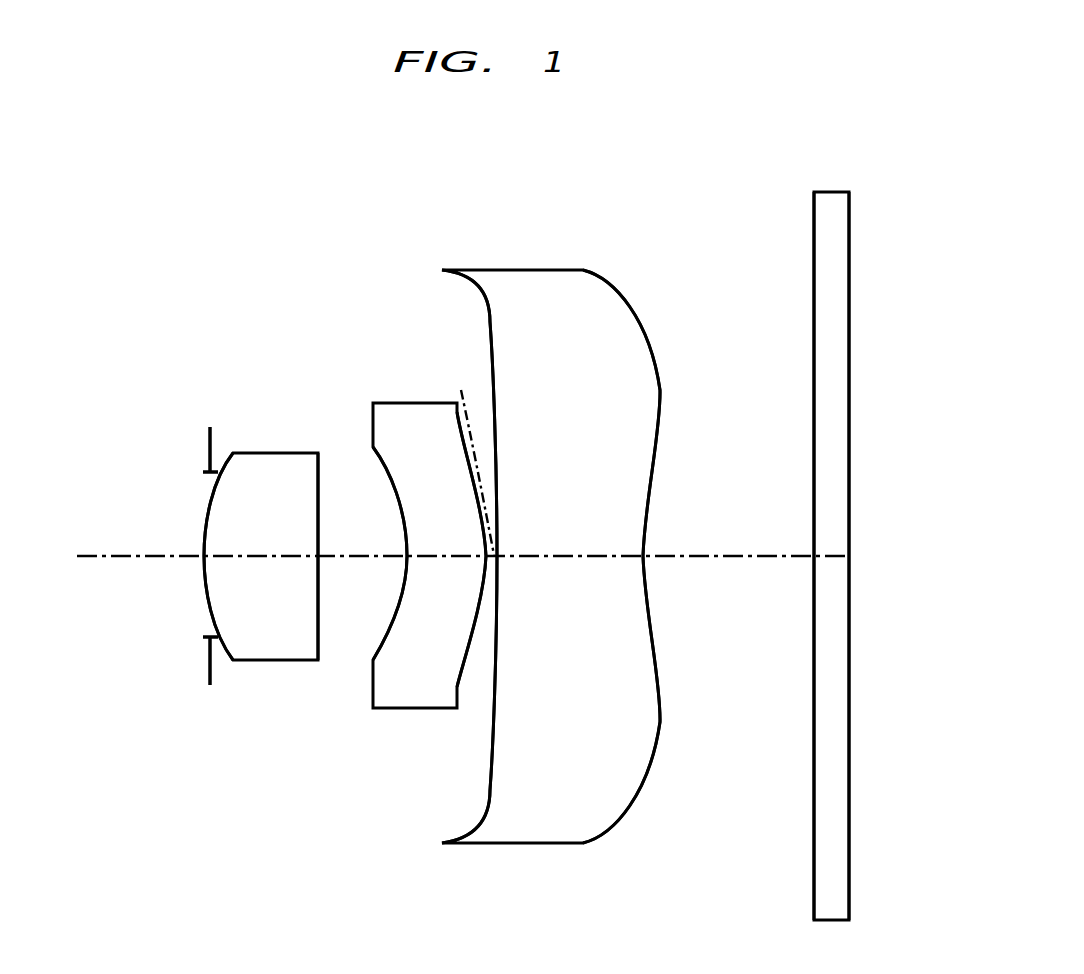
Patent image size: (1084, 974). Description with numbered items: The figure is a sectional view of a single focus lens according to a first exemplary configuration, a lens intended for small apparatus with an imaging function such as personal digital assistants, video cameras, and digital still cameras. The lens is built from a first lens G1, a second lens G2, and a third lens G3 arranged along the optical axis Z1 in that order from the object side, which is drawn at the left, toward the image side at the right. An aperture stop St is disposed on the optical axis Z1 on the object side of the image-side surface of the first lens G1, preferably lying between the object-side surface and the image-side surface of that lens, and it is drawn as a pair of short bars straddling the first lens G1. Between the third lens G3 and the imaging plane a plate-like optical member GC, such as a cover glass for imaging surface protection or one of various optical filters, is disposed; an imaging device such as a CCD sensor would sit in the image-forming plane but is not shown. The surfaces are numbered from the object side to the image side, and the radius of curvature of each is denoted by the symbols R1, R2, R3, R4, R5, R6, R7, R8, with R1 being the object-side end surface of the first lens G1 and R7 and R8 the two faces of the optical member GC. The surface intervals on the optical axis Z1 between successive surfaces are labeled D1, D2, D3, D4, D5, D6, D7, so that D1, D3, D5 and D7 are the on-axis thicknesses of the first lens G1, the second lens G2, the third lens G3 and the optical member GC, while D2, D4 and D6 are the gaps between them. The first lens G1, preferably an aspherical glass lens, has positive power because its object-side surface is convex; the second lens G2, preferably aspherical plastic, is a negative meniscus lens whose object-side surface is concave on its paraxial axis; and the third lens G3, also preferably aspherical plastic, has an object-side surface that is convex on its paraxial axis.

The aperture stop St is at (209, 440).
The first lens G1 is at (272, 465).
The second lens G2 is at (407, 410).
The third lens G3 is at (539, 290).
The optical member GC is at (832, 200).
The optical axis Z1 is at (117, 558).
The radius of curvature of first surface R1 is at (212, 616).
The radius of curvature of second surface R2 is at (319, 617).
The radius of curvature of third surface R3 is at (395, 622).
The radius of curvature of fourth surface R4 is at (457, 697).
The radius of curvature of fifth surface R5 is at (497, 668).
The radius of curvature of sixth surface R6 is at (633, 806).
The radius of curvature of seventh surface R7 is at (814, 822).
The radius of curvature of eighth surface R8 is at (849, 822).
The surface interval between first and second surfaces D1 is at (266, 540).
The surface interval between second and third surfaces D2 is at (359, 540).
The surface interval between third and fourth surfaces D3 is at (444, 540).
The surface interval between fourth and fifth surfaces D4 is at (470, 455).
The surface interval between fifth and sixth surfaces D5 is at (572, 540).
The surface interval between sixth and seventh surfaces D6 is at (739, 536).
The surface interval between seventh and eighth surfaces D7 is at (835, 556).